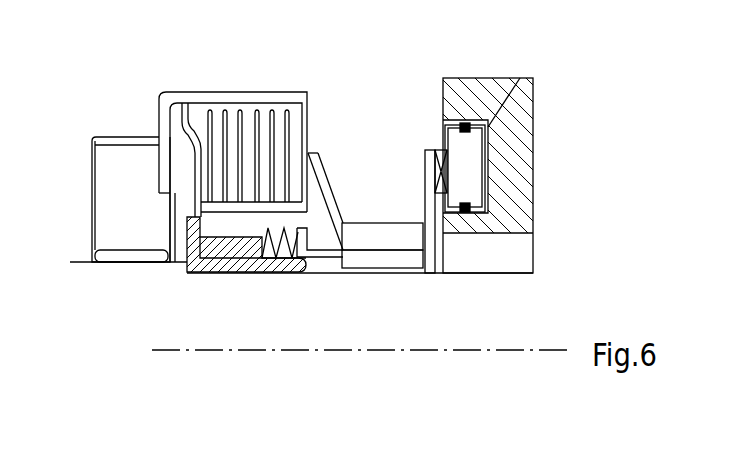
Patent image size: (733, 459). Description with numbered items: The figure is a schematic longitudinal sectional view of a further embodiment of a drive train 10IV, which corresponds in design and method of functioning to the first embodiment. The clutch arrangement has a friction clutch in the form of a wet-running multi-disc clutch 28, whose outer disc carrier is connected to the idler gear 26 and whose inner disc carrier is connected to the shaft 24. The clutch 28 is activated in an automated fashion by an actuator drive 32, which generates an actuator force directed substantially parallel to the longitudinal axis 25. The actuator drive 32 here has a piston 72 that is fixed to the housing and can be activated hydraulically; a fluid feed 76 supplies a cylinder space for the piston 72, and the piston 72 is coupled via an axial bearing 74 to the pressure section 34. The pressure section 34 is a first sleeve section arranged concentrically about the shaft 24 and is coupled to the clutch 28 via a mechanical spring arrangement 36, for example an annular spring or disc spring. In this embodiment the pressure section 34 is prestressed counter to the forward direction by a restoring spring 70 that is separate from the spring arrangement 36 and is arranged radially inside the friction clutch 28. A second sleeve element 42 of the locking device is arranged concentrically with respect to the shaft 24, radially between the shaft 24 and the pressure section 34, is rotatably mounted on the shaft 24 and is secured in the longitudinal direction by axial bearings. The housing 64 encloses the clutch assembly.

The drive train 10IV is at (564, 95).
The shaft 24 is at (508, 303).
The longitudinal axis 25 is at (493, 350).
The idler gear 26 is at (128, 167).
The friction clutch 28 is at (252, 150).
The actuator drive 32 is at (480, 56).
The pressure section 34 is at (397, 232).
The spring arrangement 36 is at (322, 188).
The second sleeve element 42 is at (394, 258).
The heat sink housing 64 is at (233, 131).
The restoring spring 70 is at (292, 262).
The piston 72 is at (470, 172).
The axial bearing 74 is at (445, 195).
The fluid feed 76 is at (510, 80).